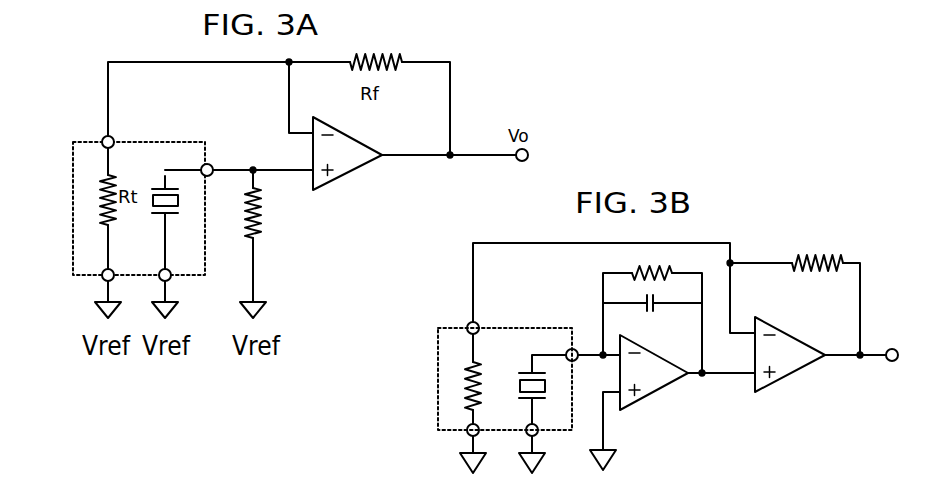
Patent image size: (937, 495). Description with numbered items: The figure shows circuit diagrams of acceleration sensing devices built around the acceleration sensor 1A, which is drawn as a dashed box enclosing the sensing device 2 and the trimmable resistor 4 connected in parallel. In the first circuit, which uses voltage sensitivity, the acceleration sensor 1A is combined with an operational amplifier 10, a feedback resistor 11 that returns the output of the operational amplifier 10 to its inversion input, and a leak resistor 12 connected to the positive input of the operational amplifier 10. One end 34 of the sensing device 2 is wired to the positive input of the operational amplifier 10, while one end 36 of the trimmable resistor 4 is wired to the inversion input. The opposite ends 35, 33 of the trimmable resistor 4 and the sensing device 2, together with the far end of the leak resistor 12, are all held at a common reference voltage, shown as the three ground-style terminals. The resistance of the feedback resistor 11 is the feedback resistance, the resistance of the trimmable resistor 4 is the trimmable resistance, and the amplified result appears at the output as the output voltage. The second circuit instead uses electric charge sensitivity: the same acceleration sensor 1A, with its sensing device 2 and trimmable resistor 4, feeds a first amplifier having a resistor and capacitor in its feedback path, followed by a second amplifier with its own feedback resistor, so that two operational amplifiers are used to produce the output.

In FIG. 3A, the acceleration sensor 1A is at (73, 176).
In FIG. 3B, the acceleration sensor 1A is at (438, 376).
In FIG. 3A, the sensing device 2 is at (178, 200).
In FIG. 3A, the trimmable resistor 4 is at (97, 205).
In FIG. 3B, the trimmable resistor 4 is at (466, 389).
In FIG. 3A, the operational amplifier 10 is at (352, 172).
In FIG. 3A, the feedback resistor 11 is at (381, 58).
In FIG. 3A, the leak resistor 12 is at (261, 210).
In FIG. 3A, the terminal 33 is at (170, 280).
In FIG. 3A, the one end of the sensing device 34 is at (212, 165).
In FIG. 3A, the terminal 35 is at (98, 282).
In FIG. 3A, the one end of the trimmable resistor 36 is at (103, 138).